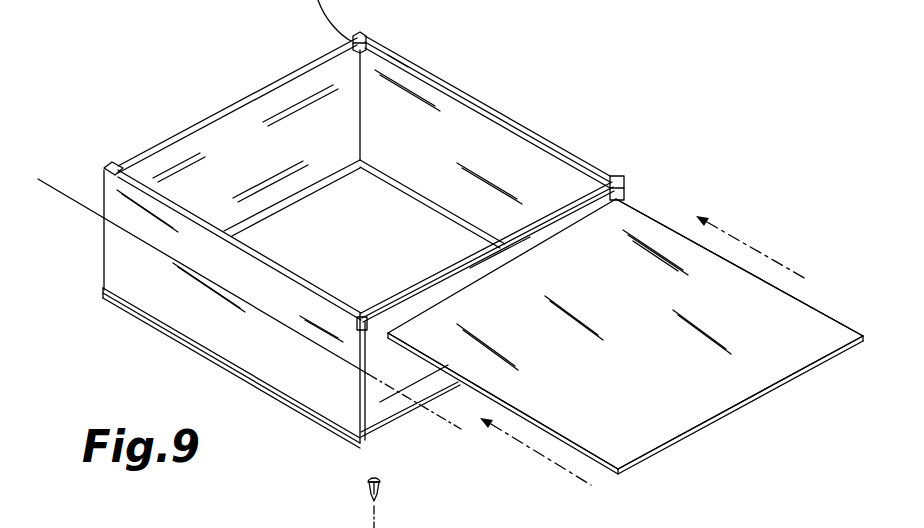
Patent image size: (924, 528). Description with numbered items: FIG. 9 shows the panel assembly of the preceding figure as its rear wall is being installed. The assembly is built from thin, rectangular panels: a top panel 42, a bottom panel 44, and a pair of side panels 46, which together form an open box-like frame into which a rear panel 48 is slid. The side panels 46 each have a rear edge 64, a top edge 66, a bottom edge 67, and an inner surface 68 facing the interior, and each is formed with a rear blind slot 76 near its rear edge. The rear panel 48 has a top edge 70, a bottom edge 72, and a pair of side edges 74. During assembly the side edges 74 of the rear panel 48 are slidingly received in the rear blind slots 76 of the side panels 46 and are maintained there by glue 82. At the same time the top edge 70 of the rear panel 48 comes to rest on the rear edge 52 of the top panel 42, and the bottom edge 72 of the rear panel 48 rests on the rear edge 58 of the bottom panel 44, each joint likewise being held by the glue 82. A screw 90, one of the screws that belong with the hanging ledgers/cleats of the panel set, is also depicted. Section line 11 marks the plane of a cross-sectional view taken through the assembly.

The top panel 42 is at (342, 263).
The bottom panel 44 is at (380, 352).
The side panels 46 is at (130, 217).
The rear panel 48 is at (657, 238).
The rear edge of the top panel 52 is at (190, 134).
The rear edge of the bottom panel 58 is at (410, 296).
The rear edges of the side panels 64 is at (538, 137).
The top edges of the side panels 66 is at (103, 276).
The bottom edges of the side panels 67 is at (614, 178).
The inner surfaces of the side panels 68 is at (509, 165).
The top edge of the rear panel 70 is at (526, 258).
The bottom edge of the rear panel 72 is at (683, 442).
The side edges of the rear panel 74 is at (813, 310).
The rear blind slots 76 is at (398, 67).
The glue 82 is at (345, 177).
The screws 90 is at (365, 489).
The section line 11- 11 is at (60, 210).